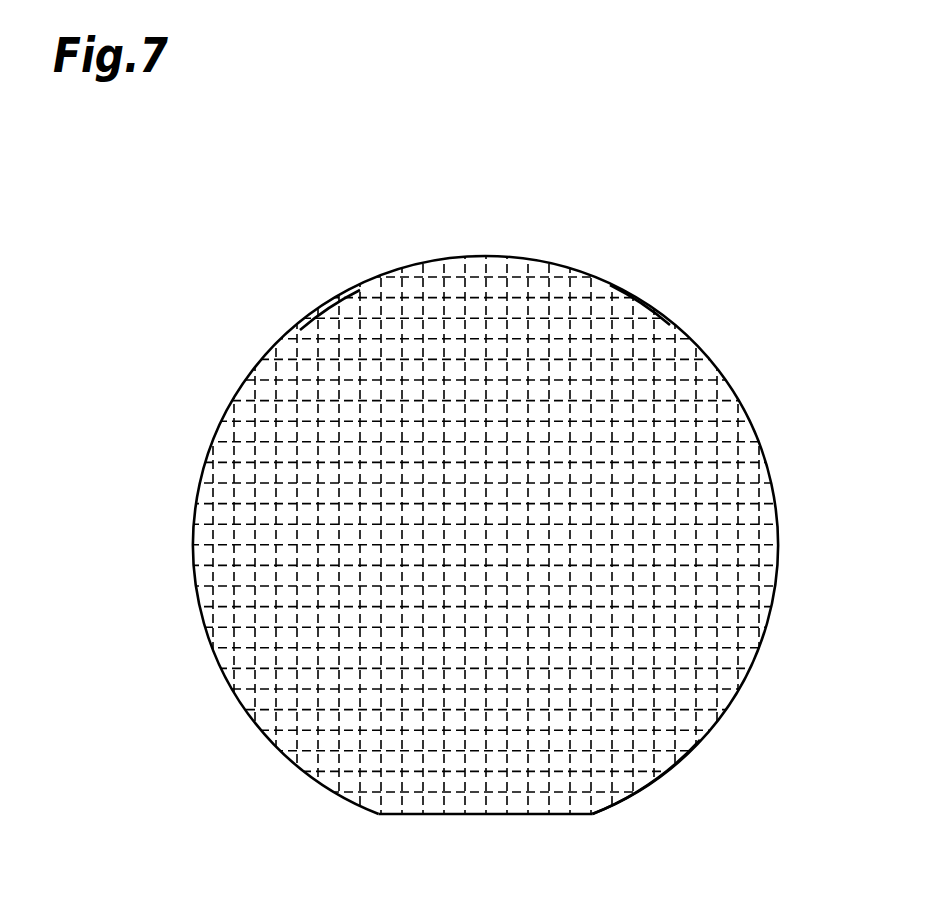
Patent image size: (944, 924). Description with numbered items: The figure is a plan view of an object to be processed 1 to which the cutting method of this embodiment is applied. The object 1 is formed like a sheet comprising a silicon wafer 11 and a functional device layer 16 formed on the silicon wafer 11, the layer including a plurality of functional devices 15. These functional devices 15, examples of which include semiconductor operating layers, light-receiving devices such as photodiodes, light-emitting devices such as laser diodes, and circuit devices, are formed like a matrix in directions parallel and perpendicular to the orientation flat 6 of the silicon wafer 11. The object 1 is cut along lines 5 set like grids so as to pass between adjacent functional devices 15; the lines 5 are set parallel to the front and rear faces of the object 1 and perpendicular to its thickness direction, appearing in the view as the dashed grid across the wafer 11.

The object to be processed 1 is at (722, 222).
The lines 5 is at (747, 523).
The orientation flat 6 is at (433, 815).
The silicon wafer 11 is at (645, 302).
The functional devices 15 is at (663, 720).
The functional device layer 16 is at (332, 302).